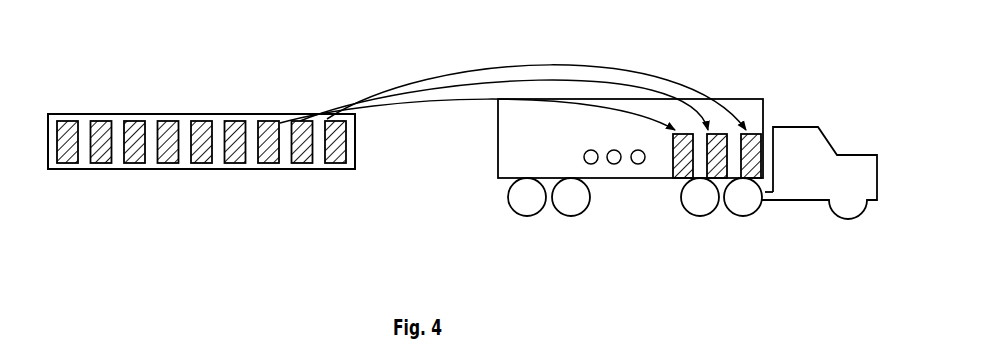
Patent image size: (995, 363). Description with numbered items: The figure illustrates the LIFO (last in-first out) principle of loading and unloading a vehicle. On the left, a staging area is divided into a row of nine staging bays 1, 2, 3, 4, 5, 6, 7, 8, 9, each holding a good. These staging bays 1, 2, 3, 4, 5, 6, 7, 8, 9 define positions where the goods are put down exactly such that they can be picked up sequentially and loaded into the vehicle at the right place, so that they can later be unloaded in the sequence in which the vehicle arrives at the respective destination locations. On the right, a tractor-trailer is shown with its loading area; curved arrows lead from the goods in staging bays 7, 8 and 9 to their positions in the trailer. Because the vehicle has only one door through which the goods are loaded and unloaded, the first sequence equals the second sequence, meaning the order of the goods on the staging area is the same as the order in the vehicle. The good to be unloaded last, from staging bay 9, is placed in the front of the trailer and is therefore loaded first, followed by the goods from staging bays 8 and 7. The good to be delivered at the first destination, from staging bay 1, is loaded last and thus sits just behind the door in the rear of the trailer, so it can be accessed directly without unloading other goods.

The staging bay 1 is at (62, 121).
The staging bay 2 is at (96, 121).
The staging bay 3 is at (129, 121).
The staging bay 4 is at (162, 121).
The staging bay 5 is at (196, 121).
The staging bay 6 is at (230, 121).
The staging bay 7 is at (263, 121).
The staging bay 8 is at (296, 121).
The staging bay 9 is at (330, 121).